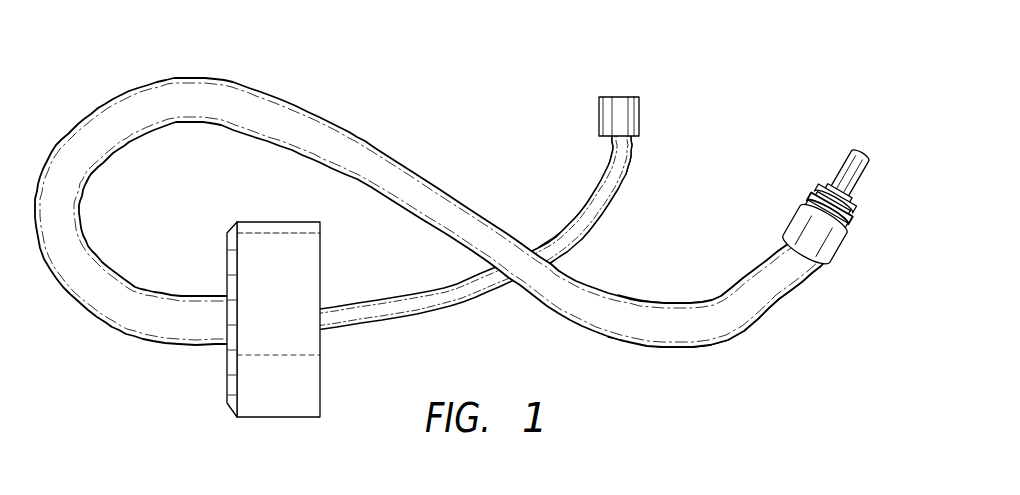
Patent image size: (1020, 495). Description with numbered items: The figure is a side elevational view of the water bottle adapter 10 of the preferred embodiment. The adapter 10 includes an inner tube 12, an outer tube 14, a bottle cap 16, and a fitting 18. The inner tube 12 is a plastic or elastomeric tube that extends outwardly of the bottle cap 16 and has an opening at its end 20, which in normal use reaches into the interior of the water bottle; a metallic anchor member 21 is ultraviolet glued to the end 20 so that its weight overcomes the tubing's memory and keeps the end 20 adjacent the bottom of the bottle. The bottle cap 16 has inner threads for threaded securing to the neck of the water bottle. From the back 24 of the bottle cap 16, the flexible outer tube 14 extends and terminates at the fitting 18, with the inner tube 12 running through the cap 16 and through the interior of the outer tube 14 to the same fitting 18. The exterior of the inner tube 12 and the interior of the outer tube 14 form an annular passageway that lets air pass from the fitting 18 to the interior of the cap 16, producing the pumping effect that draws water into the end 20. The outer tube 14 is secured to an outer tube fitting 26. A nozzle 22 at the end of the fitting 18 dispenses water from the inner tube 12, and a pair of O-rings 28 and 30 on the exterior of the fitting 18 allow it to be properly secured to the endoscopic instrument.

The water bottle adapter 10 is at (614, 258).
The inner tube 12 is at (397, 325).
The outer tube 14 is at (176, 78).
The bottle cap 16 is at (282, 405).
The fitting 18 is at (833, 262).
The end 20 is at (633, 97).
The anchor member 21 is at (602, 135).
The nozzle 22 is at (852, 155).
The back 24 is at (228, 232).
The outer tube fitting 26 is at (790, 216).
The O-ring 28 is at (857, 203).
The O-ring 30 is at (813, 190).